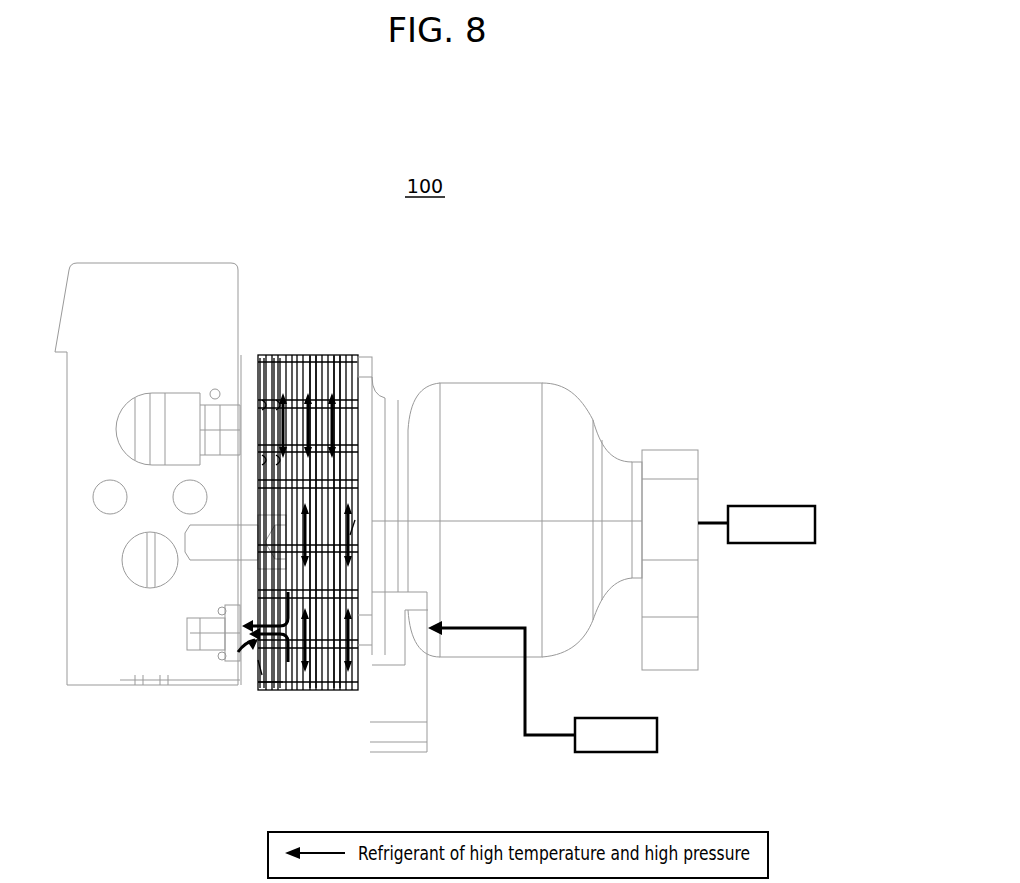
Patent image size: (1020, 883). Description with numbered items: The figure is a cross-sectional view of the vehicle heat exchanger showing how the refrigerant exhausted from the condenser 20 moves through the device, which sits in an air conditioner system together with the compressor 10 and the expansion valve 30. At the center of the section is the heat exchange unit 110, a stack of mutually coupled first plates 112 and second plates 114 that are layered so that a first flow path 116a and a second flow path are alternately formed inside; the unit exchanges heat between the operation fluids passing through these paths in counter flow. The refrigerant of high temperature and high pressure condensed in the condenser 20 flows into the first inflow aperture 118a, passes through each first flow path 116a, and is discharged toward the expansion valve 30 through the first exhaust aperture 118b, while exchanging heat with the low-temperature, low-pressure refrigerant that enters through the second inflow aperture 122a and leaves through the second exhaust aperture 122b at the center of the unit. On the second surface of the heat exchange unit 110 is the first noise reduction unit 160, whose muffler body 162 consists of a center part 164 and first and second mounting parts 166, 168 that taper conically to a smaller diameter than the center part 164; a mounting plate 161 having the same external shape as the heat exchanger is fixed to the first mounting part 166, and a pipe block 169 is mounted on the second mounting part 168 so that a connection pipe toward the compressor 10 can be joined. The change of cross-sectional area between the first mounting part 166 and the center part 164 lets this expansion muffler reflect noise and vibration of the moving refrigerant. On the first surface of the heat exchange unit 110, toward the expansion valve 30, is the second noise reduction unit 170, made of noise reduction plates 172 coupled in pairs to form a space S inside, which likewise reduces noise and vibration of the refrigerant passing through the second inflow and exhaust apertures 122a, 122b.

The compressor 10 is at (786, 506).
The condenser 20 is at (634, 754).
The expansion valve 30 is at (137, 272).
The heat exchange unit 110 is at (288, 352).
The first plate 112 is at (337, 690).
The second plate 114 is at (358, 365).
The first flow path 116a is at (364, 620).
The first inflow aperture 118a is at (380, 635).
The first exhaust aperture 118b is at (262, 672).
The second inflow aperture 122a is at (282, 423).
The second exhaust aperture 122b is at (350, 533).
The first noise reduction unit 160 is at (529, 509).
The mounting plate 161 is at (371, 373).
The muffler body 162 is at (594, 410).
The center part 164 is at (505, 385).
The first mounting part 166 is at (390, 455).
The second mounting part 168 is at (626, 466).
The pipe block 169 is at (668, 455).
The second noise reduction unit 170 is at (258, 352).
The noise reduction plate 172 is at (270, 388).
The space S is at (283, 672).